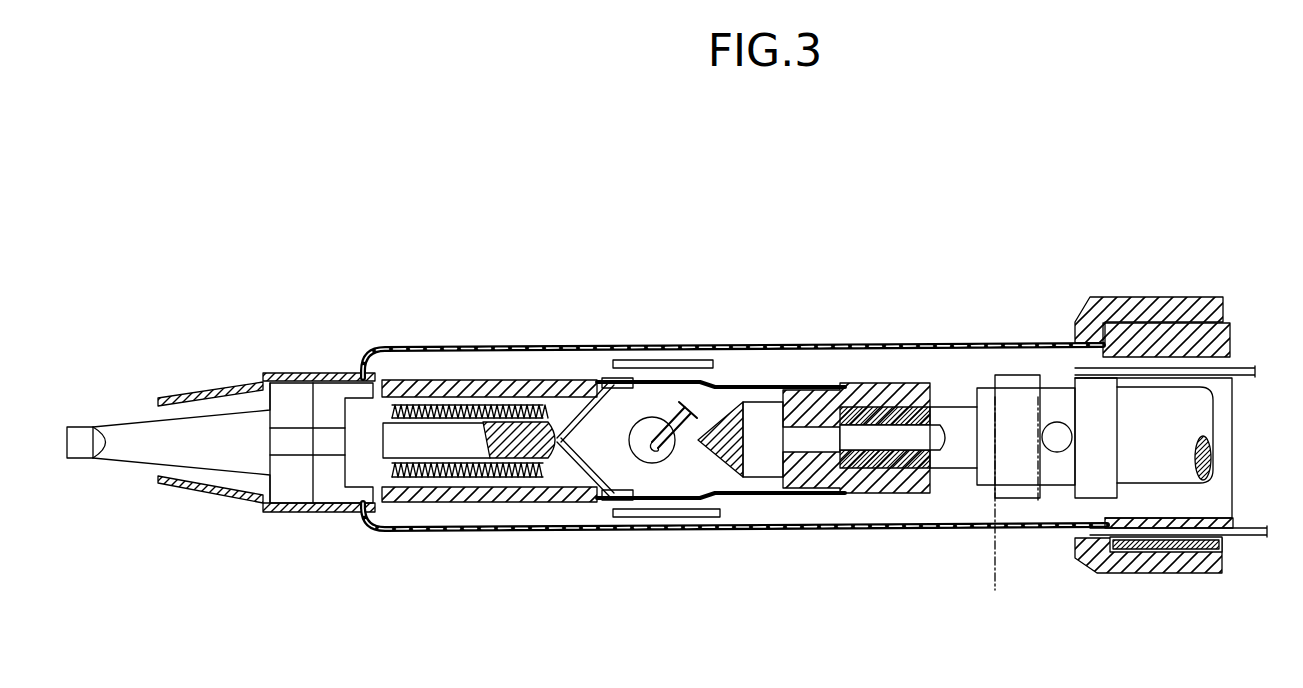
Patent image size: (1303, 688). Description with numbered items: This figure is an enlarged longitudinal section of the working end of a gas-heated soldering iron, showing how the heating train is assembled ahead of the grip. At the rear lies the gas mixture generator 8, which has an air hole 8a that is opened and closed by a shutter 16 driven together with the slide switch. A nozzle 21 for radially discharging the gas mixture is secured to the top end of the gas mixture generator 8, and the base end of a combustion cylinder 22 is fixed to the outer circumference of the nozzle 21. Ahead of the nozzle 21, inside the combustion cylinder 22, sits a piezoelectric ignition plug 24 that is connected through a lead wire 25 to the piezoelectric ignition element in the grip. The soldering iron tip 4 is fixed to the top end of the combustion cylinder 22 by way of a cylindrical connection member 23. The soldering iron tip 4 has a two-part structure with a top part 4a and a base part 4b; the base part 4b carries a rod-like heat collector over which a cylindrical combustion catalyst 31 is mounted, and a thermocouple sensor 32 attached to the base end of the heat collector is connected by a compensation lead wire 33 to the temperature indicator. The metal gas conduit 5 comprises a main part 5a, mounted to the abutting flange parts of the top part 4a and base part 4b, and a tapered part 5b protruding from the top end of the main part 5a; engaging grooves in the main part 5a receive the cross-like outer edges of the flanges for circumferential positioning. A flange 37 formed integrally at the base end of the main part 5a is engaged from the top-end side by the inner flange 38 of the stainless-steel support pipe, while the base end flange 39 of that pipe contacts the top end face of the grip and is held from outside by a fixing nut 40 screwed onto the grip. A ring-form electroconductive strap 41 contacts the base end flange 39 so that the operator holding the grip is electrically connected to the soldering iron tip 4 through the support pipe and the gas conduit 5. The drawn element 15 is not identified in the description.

The soldering iron tip 4 is at (164, 422).
The top part 4a is at (140, 455).
The base part 4b is at (333, 470).
The gas conduit 5 is at (266, 403).
The main part 5a is at (285, 504).
The tapered part 5b is at (203, 388).
The gas mixture generator 8 is at (1172, 437).
The air hole 8a is at (1053, 424).
The pin 15 is at (1252, 368).
The shutter 16 is at (1097, 473).
The nozzle 21 is at (890, 385).
The combustion cylinder 22 is at (770, 495).
The cylindrical connection member 23 is at (432, 380).
The piezoelectric ignition plug 24 is at (650, 460).
The lead wire 25 is at (688, 405).
The cylindrical combustion catalyst 31 is at (512, 470).
The sensor 32 is at (582, 452).
The compensation lead wire 33 is at (655, 372).
The flange 37 is at (378, 520).
The inner flange 38 is at (358, 370).
The base end flange 39 is at (1088, 322).
The fixing nut 40 is at (1165, 298).
The electroconductive strap 41 is at (1267, 542).